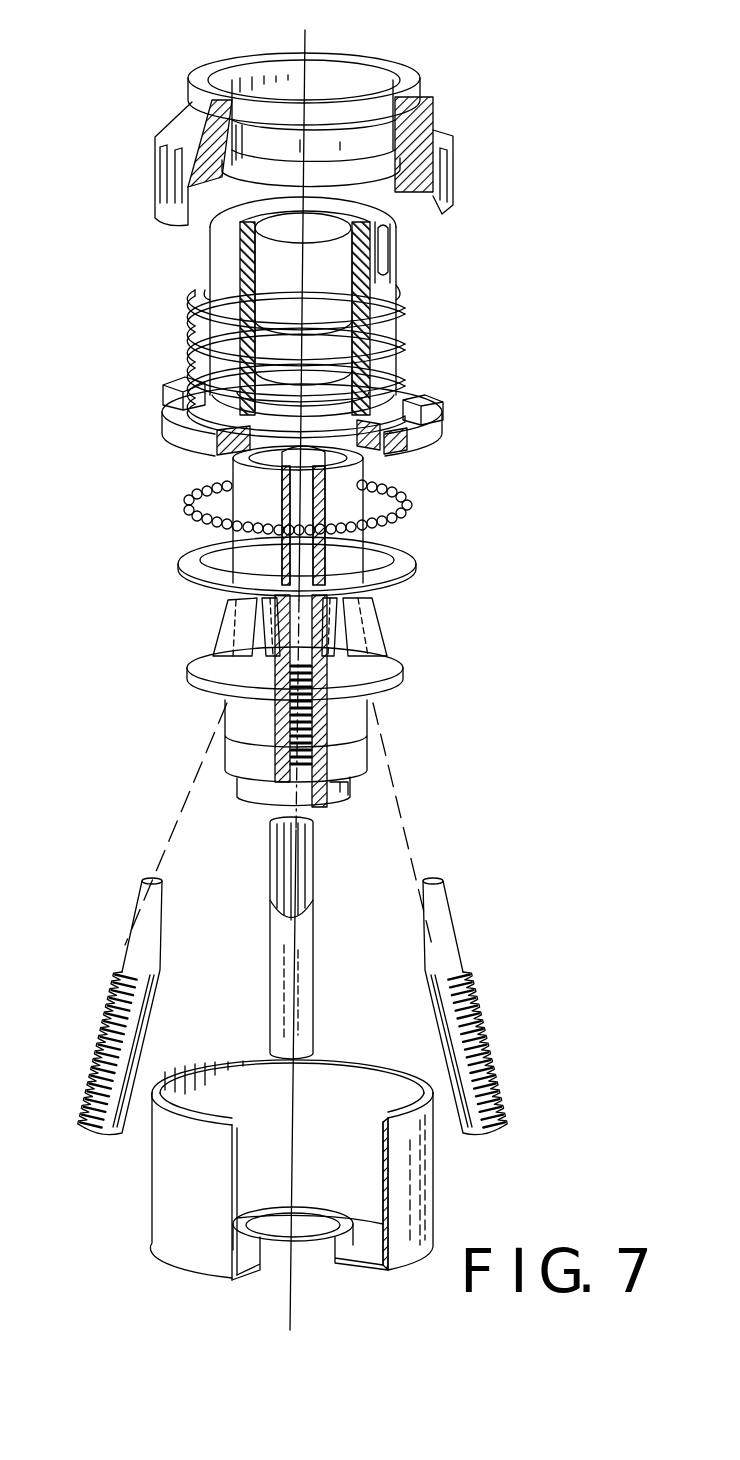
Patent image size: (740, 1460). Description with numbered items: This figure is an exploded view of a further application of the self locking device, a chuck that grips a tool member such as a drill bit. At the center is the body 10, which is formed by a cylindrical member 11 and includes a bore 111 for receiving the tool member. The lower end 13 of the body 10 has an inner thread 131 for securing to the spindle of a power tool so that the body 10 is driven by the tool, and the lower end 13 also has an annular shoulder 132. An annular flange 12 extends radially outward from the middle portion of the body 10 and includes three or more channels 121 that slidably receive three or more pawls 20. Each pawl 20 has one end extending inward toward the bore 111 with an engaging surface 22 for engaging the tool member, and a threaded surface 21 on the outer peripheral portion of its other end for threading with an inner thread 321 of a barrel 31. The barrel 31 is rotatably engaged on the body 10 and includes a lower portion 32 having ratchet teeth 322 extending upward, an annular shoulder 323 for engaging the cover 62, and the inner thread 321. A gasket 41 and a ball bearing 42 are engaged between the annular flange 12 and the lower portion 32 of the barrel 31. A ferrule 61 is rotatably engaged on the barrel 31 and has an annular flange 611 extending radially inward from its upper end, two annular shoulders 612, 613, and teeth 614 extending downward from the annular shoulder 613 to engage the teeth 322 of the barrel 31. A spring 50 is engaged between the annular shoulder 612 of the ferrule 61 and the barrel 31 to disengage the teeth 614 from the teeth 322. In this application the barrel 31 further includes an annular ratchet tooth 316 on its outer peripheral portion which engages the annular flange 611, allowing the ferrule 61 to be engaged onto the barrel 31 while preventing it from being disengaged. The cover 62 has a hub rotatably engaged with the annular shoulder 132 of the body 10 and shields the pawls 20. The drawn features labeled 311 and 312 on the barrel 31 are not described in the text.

The body 10 is at (290, 690).
The cylindrical member 11 is at (351, 515).
The bore 111 is at (365, 452).
The annular flange 12 is at (200, 653).
The channels 121 is at (187, 673).
The lower end 13 is at (296, 702).
The inner thread 131 is at (283, 730).
The annular shoulder 132 is at (350, 790).
The pawls 20 is at (296, 976).
The threaded surface 21 is at (110, 1022).
The engaging surface 22 is at (307, 853).
The barrel 31 is at (314, 306).
The top end of cylinder 311 is at (357, 202).
The slot of cylinder 312 is at (380, 253).
The annular ratchet tooth 316 is at (218, 275).
The lower portion 32 is at (308, 403).
The inner thread 321 is at (423, 443).
The teeth 322 is at (173, 377).
The annular shoulder 323 is at (195, 446).
The gasket 41 is at (183, 565).
The ball bearing 42 is at (190, 502).
The spring 50 is at (200, 328).
The ferrule 61 is at (295, 113).
The annular flange 611 is at (405, 97).
The annular shoulder 612 is at (400, 145).
The annular shoulder 613 is at (232, 62).
The teeth 614 is at (350, 147).
The cover 62 is at (167, 1187).